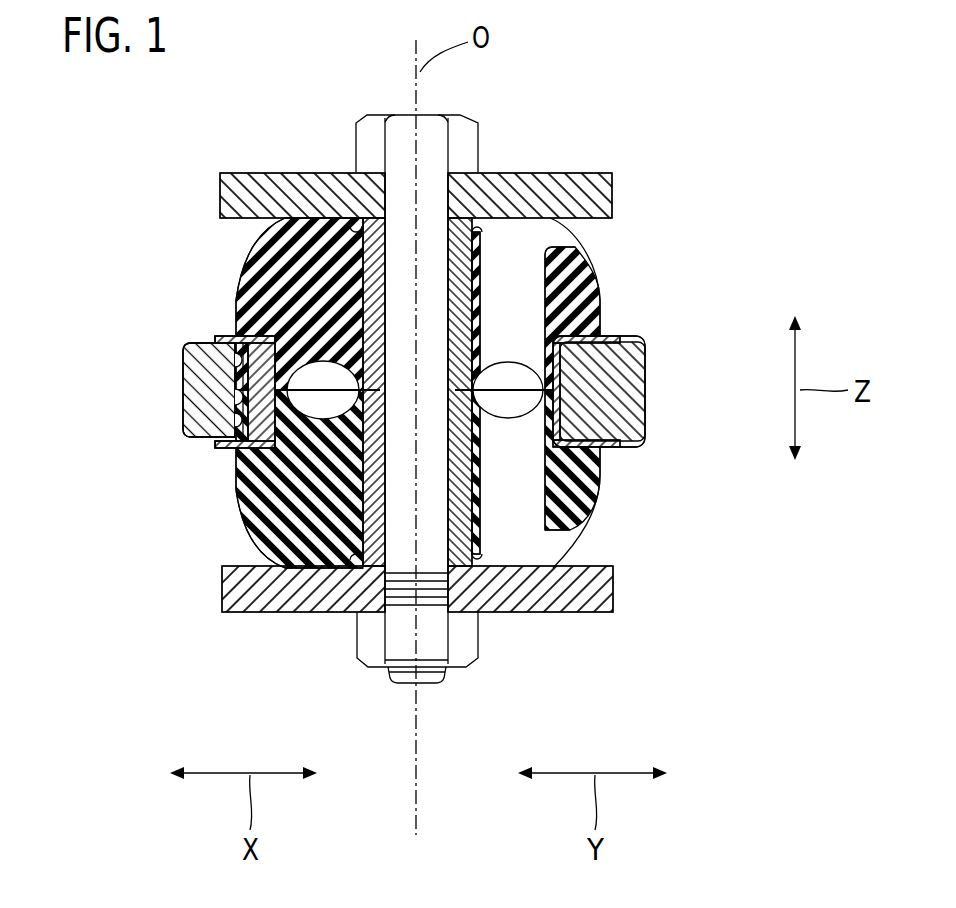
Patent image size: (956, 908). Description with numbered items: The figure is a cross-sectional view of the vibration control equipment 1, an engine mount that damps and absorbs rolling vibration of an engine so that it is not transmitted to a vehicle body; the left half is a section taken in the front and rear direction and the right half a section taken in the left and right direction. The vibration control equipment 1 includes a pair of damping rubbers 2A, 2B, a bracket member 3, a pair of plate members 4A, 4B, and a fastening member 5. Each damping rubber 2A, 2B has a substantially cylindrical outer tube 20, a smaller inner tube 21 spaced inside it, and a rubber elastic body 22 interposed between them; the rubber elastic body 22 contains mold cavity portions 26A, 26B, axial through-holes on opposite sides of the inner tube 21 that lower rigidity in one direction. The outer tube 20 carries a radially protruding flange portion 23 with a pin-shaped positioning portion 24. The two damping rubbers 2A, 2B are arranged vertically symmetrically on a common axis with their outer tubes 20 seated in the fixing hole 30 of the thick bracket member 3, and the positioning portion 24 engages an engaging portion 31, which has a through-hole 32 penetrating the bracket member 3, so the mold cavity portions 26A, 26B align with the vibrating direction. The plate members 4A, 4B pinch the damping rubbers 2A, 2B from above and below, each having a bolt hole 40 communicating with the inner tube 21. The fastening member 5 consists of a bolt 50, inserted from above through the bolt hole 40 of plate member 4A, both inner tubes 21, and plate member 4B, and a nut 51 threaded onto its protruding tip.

The vibration control equipment 1 is at (598, 78).
The damping rubber 2A is at (614, 278).
The damping rubber 2B is at (620, 488).
The bracket member 3 is at (647, 392).
The plate member 4A is at (612, 181).
The plate member 4B is at (613, 582).
The fastening member 5 is at (446, 702).
The outer tube 20 is at (568, 372).
The inner tube 21 is at (362, 300).
The rubber elastic body 22 is at (254, 264).
The flange portion 23 is at (237, 338).
The positioning portion 24 is at (238, 359).
The mold cavity portion 26A is at (515, 285).
The mold cavity portion 26B is at (549, 388).
The fixing hole 30 is at (530, 398).
The engaging portion 31 is at (224, 343).
The through-hole 32 is at (200, 395).
The bolt hole 40 is at (445, 176).
The bolt 50 is at (402, 130).
The nut 51 is at (403, 682).